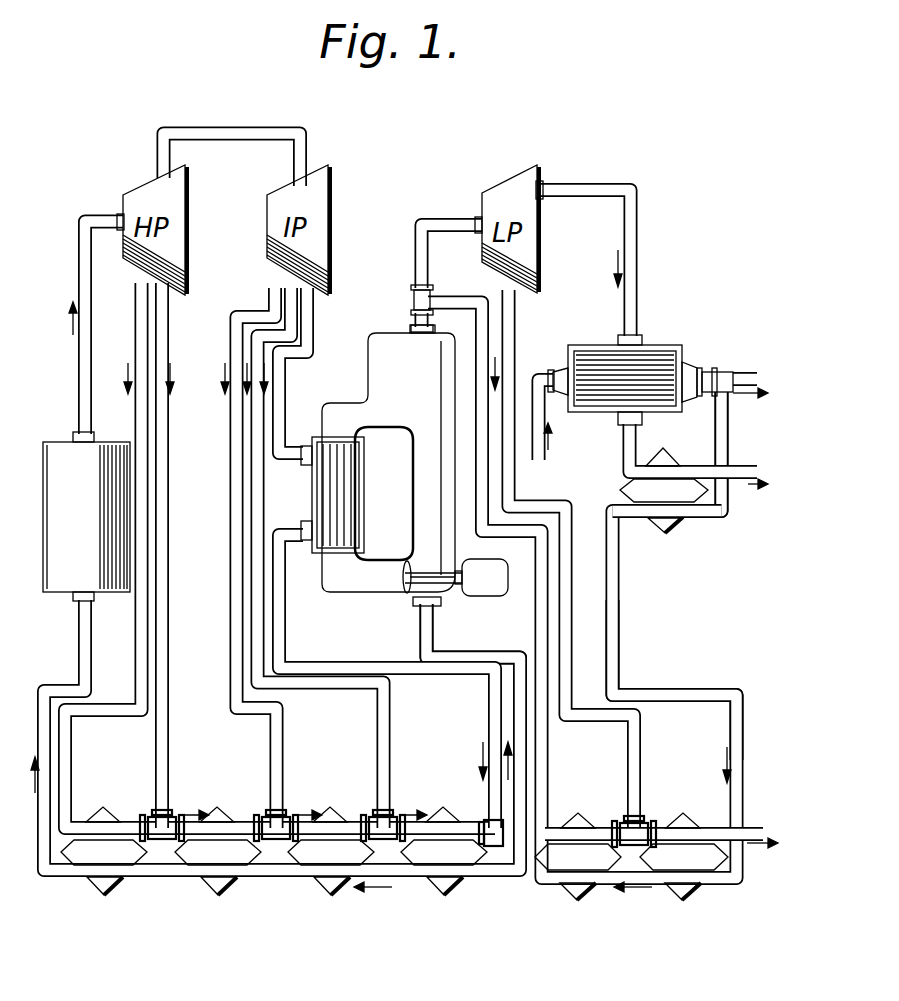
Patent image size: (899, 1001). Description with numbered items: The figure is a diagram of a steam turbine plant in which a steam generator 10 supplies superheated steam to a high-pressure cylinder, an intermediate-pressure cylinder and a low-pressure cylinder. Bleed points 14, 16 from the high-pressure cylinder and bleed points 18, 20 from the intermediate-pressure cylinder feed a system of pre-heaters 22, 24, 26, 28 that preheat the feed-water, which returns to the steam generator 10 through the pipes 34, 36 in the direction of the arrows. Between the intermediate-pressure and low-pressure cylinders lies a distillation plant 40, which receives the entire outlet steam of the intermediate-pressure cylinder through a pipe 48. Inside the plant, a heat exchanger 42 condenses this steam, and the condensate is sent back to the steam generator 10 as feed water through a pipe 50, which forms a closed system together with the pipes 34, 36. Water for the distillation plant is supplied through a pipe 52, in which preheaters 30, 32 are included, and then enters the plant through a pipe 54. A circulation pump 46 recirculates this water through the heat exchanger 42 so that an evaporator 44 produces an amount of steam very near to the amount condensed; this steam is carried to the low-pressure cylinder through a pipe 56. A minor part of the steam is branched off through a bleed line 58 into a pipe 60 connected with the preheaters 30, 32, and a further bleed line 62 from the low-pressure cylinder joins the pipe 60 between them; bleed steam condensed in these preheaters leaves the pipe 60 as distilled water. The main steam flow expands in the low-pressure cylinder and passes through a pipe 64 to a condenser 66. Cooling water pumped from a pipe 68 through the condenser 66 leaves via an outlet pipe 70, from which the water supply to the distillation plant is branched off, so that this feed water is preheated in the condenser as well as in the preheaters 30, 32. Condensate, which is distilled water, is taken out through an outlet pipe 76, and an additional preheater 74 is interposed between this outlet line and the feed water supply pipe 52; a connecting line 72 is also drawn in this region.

The steam generator 10 is at (57, 452).
The bleed point 14 is at (135, 644).
The bleed point 16 is at (161, 642).
The bleed point 18 is at (230, 493).
The bleed point 20 is at (265, 492).
The pre-heater 22 is at (98, 893).
The pre-heater 24 is at (211, 893).
The pre-heater 26 is at (325, 895).
The pre-heater 28 is at (432, 895).
The preheater 30 is at (572, 897).
The preheater 32 is at (683, 897).
The feed-water pipe 34 is at (280, 878).
The feed-water pipe 36 is at (77, 641).
The distillation plant 40 is at (383, 333).
The heat exchanger 42 is at (352, 494).
The evaporator 44 is at (384, 373).
The circulation pump 46 is at (405, 590).
The pipe 48 is at (285, 386).
The pipe 50 is at (354, 663).
The pipe 52 is at (691, 688).
The pipe 54 is at (488, 650).
The pipe 56 is at (447, 218).
The bleed line 58 is at (484, 297).
The pipe 60 is at (727, 828).
The bleed line 62 is at (573, 623).
The pipe 64 is at (598, 181).
The condenser 66 is at (655, 345).
The pipe 68 is at (545, 375).
The outlet pipe 70 is at (741, 371).
The condensate line 72 is at (729, 434).
The additional preheater 74 is at (670, 526).
The outlet pipe 76 is at (708, 466).